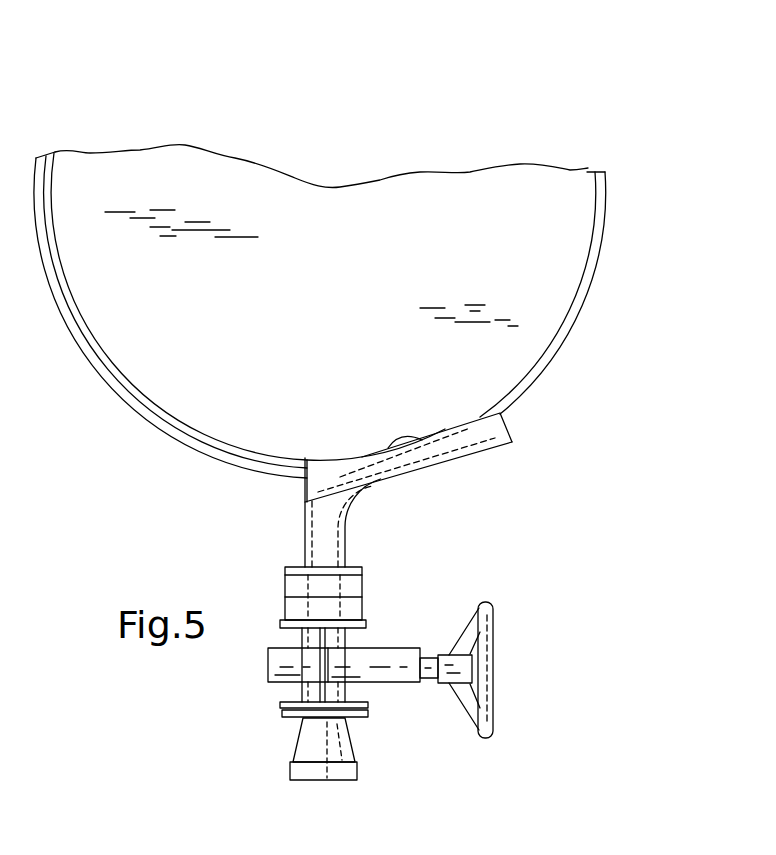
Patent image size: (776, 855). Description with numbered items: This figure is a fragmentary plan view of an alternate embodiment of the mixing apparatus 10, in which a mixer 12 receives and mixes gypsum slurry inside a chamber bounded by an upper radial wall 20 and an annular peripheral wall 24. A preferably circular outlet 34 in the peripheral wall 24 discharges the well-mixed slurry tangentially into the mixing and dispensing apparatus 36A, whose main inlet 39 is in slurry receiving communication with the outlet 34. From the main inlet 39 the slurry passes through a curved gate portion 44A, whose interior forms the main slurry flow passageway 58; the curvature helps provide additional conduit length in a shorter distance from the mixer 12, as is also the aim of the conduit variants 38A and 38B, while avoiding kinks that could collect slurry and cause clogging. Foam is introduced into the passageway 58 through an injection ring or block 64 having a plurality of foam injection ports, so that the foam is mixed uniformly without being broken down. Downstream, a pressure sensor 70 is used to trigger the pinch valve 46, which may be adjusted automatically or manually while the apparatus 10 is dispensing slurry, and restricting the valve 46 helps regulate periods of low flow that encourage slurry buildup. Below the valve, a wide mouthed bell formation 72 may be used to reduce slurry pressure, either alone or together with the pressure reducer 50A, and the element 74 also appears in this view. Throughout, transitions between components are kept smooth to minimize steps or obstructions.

The mixing apparatus 10 is at (682, 204).
The mixer 12 is at (600, 255).
The upper radial wall 20 is at (542, 305).
The annular peripheral wall 24 is at (183, 435).
The outlet 34 is at (420, 442).
The mixing and dispensing apparatus 36A is at (258, 580).
The conduit 38A is at (297, 733).
The conduit 38B is at (759, 739).
The main inlet 39 is at (444, 436).
The curved gate portion 44A is at (343, 508).
The pinch valve 46 is at (387, 682).
The pressure reducer 50A is at (288, 780).
The main slurry flow passageway 58 is at (312, 523).
The injection ring or block 64 is at (362, 585).
The pressure sensor 70 is at (352, 610).
The wide mouthed bell formation 72 is at (343, 778).
The handwheel 74 is at (764, 638).